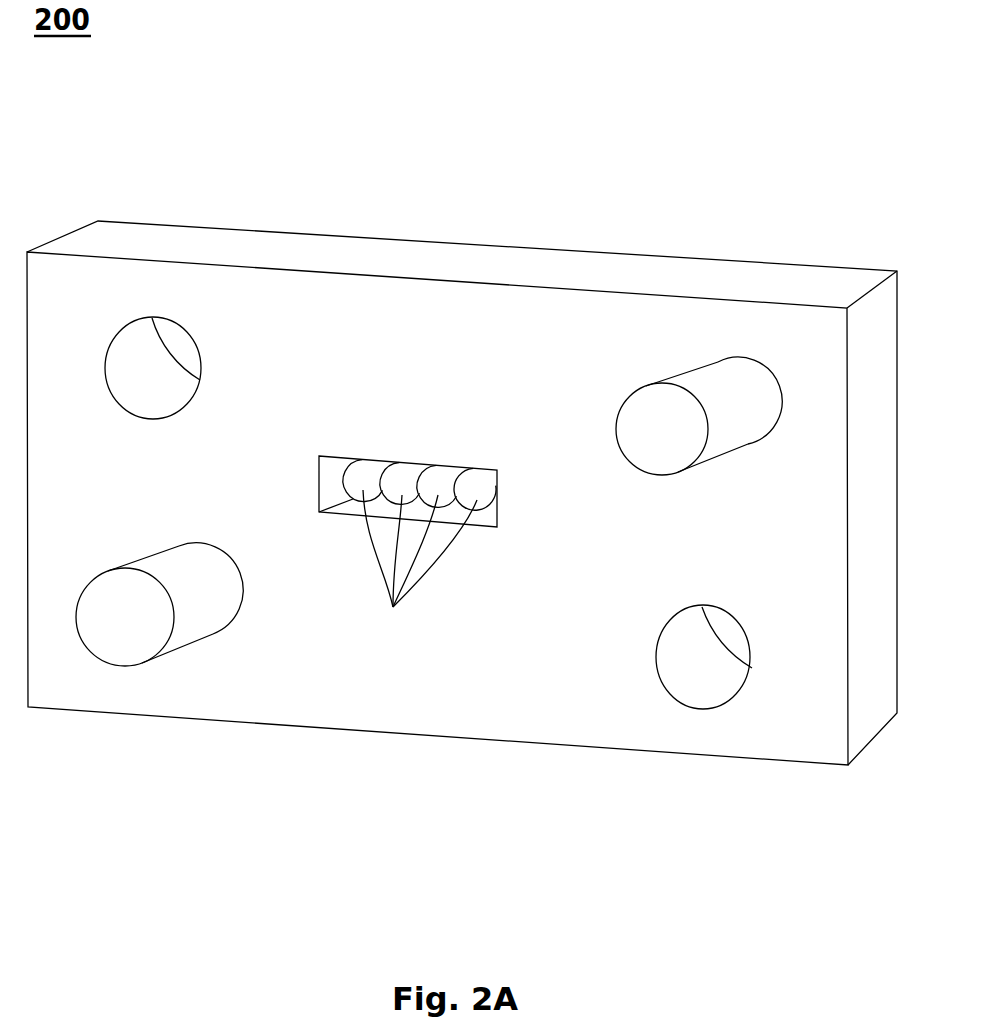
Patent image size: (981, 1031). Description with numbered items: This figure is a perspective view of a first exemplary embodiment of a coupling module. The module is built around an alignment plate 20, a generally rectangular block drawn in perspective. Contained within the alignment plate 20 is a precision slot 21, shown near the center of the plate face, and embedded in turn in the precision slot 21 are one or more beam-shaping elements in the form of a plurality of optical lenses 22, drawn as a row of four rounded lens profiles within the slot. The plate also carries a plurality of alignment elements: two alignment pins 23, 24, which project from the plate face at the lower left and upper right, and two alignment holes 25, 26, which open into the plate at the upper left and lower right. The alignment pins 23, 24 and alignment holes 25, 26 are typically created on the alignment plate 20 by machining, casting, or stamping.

The alignment plate 20 is at (467, 375).
The precision slot 21 is at (332, 487).
The optical lenses 22 is at (393, 607).
The alignment pin 23 is at (121, 622).
The alignment pin 24 is at (645, 422).
The alignment hole 25 is at (133, 363).
The alignment hole 26 is at (686, 663).